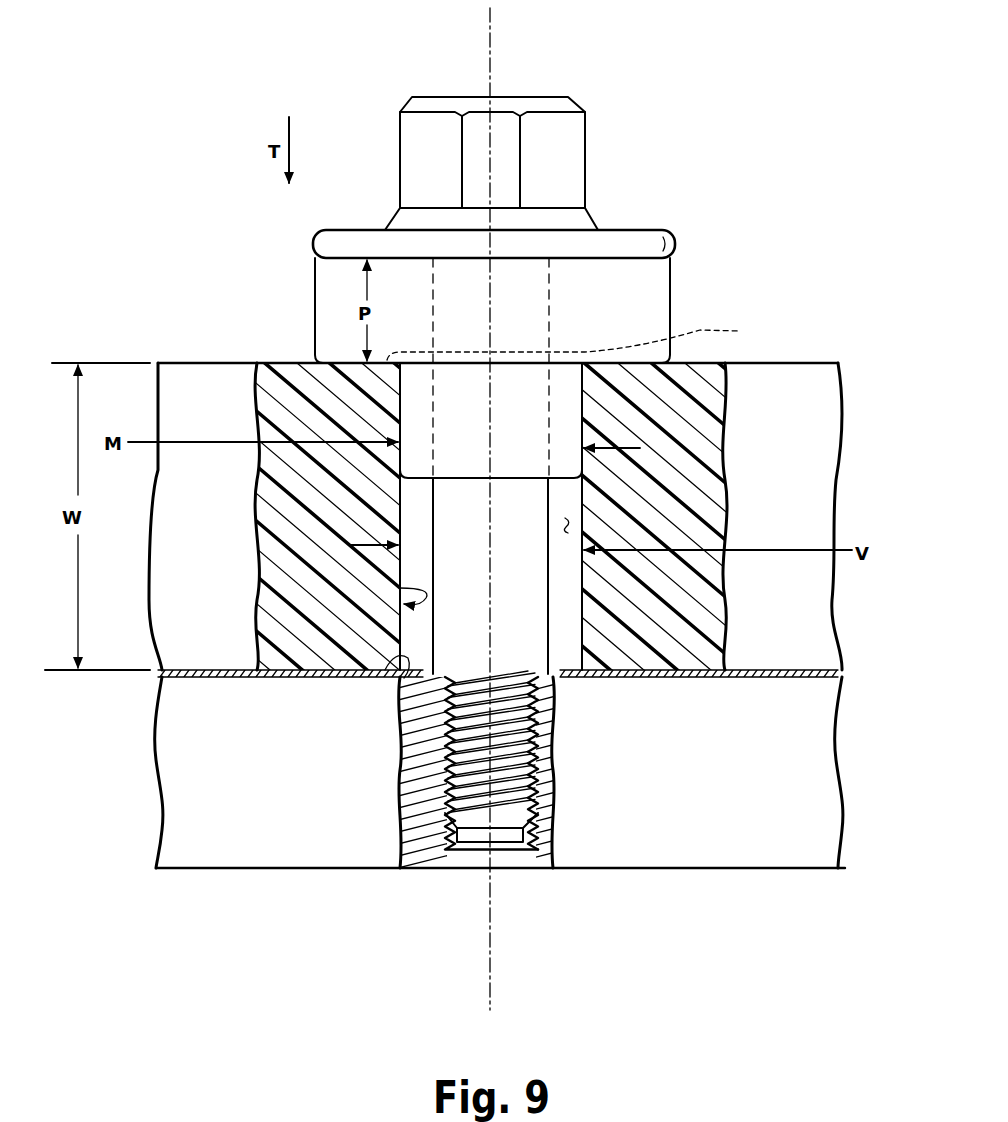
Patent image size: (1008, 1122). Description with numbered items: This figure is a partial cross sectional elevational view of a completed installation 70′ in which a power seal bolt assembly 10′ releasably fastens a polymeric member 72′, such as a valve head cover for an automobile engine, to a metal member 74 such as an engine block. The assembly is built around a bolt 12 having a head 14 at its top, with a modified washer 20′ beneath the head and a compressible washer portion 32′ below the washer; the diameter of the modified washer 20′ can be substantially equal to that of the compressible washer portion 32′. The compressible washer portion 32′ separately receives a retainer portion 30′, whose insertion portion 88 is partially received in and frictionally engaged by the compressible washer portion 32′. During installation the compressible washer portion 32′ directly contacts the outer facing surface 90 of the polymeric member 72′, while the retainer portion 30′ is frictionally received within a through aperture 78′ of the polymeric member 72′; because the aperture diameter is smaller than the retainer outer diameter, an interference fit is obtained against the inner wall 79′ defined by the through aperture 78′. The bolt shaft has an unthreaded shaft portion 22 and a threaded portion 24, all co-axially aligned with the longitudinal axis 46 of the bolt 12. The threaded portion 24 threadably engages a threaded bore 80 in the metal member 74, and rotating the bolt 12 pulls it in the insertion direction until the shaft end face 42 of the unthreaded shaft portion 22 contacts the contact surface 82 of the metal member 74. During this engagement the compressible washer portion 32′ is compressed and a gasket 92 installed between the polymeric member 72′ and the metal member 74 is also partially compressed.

The completed installation 70′ is at (737, 107).
The power seal bolt assembly 10′ is at (638, 197).
The bolt 12 is at (587, 165).
The head 14 is at (410, 155).
The modified washer 20′ is at (670, 230).
The compressible washer portion 32′ is at (632, 322).
The insertion portion 88 is at (576, 341).
The outer facing surface 90 is at (308, 357).
The retainer portion 30′ is at (530, 427).
The unthreaded shaft portion 22 is at (530, 617).
The through aperture 78′ is at (570, 526).
The inner wall 79′ is at (400, 588).
The polymeric member 72′ is at (792, 627).
The gasket 92 is at (818, 670).
The contact surface 82 is at (385, 670).
The shaft end face 42 is at (550, 682).
The threaded portion 24 is at (460, 813).
The metal member 74 is at (747, 787).
The threaded bore 80 is at (448, 824).
The longitudinal axis 46 is at (490, 934).